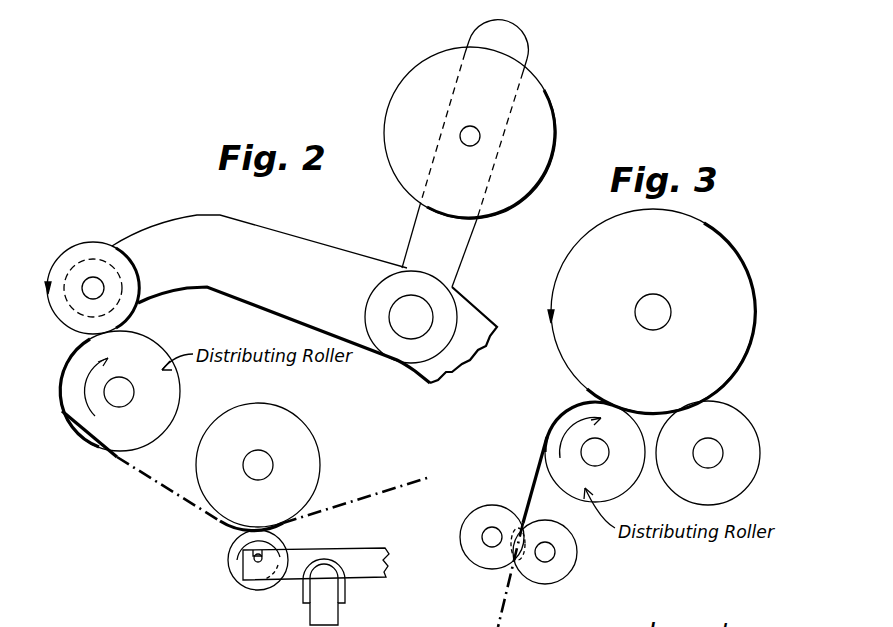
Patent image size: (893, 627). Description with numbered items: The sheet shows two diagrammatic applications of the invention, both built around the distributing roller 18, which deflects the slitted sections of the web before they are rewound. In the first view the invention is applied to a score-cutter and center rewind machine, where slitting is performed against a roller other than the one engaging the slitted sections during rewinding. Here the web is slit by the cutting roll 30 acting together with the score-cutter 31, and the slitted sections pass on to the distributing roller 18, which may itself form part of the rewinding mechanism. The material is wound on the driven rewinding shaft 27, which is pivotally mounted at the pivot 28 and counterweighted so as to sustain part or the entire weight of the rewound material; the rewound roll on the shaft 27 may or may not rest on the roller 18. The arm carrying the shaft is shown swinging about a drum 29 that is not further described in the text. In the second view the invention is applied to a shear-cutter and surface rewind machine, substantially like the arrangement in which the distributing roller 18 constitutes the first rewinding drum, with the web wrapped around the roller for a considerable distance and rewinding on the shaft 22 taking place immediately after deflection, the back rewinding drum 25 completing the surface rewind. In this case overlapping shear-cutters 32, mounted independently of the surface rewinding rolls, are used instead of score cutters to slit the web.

In FIG. 2, the distributing roller 18 is at (173, 398).
In FIG. 3, the distributing roller 18 is at (547, 437).
In FIG. 3, the shaft 22 is at (661, 312).
In FIG. 3, the back rewinding drum 25 is at (740, 411).
In FIG. 2, the driven rewinding shaft 27 is at (77, 260).
In FIG. 2, the pivot 28 is at (407, 330).
In FIG. 2, the roller 29 is at (540, 133).
In FIG. 2, the cutting roll 30 is at (303, 448).
In FIG. 2, the score-cutter 31 is at (233, 570).
In FIG. 3, the overlapping shear-cutters 32 is at (532, 572).